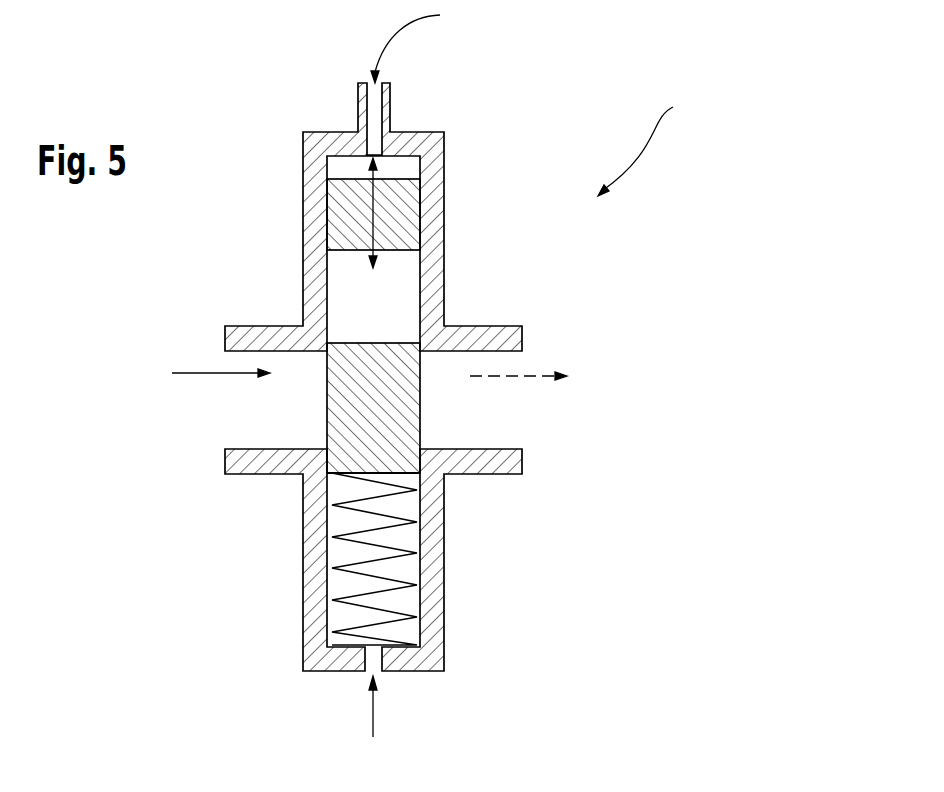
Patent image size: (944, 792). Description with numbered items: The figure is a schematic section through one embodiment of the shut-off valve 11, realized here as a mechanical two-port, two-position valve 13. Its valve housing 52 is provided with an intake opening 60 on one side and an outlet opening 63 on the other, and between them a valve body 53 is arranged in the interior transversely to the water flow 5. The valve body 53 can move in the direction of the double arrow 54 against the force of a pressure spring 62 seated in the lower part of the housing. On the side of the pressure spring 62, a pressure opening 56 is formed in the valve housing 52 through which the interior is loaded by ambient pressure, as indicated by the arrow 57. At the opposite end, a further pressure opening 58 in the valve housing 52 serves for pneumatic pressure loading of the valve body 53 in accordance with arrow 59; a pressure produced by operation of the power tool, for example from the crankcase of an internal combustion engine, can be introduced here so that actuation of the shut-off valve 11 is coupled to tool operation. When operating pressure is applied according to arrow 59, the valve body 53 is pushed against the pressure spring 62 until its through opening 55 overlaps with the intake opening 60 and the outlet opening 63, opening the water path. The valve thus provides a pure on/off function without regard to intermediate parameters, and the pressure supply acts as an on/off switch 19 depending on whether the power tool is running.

The water flow 5 is at (217, 373).
The shut-off valve 11 is at (649, 143).
The mechanical 2/2-way valve 13 is at (391, 377).
The on/off switch 19 is at (489, 54).
The valve housing 52 is at (433, 593).
The valve body 53 is at (352, 453).
The double arrow 54 is at (373, 213).
The through opening 55 is at (343, 288).
The pressure opening 56 is at (368, 673).
The arrow 57 is at (373, 716).
The pressure opening 58 is at (373, 108).
The arrow 59 is at (383, 42).
The intake opening 60 is at (252, 425).
The pressure spring 62 is at (358, 545).
The outlet opening 63 is at (495, 428).